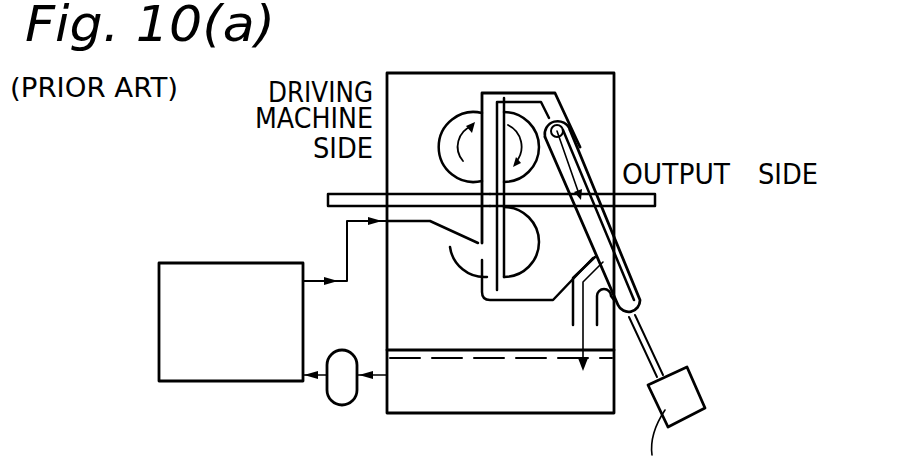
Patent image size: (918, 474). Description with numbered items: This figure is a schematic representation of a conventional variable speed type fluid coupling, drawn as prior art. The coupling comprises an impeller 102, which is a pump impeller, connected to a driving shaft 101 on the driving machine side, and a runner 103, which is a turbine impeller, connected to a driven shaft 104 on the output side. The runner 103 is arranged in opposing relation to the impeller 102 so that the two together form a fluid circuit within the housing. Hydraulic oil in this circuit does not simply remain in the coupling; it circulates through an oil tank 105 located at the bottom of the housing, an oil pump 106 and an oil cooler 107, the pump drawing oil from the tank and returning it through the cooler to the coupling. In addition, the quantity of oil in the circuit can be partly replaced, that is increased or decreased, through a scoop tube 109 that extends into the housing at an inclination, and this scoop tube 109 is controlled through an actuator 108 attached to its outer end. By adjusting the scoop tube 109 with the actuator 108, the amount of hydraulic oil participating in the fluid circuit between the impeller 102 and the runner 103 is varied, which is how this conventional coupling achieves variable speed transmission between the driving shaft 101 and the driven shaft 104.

The driving shaft 101 is at (340, 194).
The impeller 102 is at (453, 122).
The runner 103 is at (540, 96).
The driven shaft 104 is at (655, 198).
The oil tank 105 is at (530, 413).
The oil pump 106 is at (337, 405).
The oil cooler 107 is at (159, 322).
The actuator 108 is at (702, 387).
The scoop tube 109 is at (642, 300).